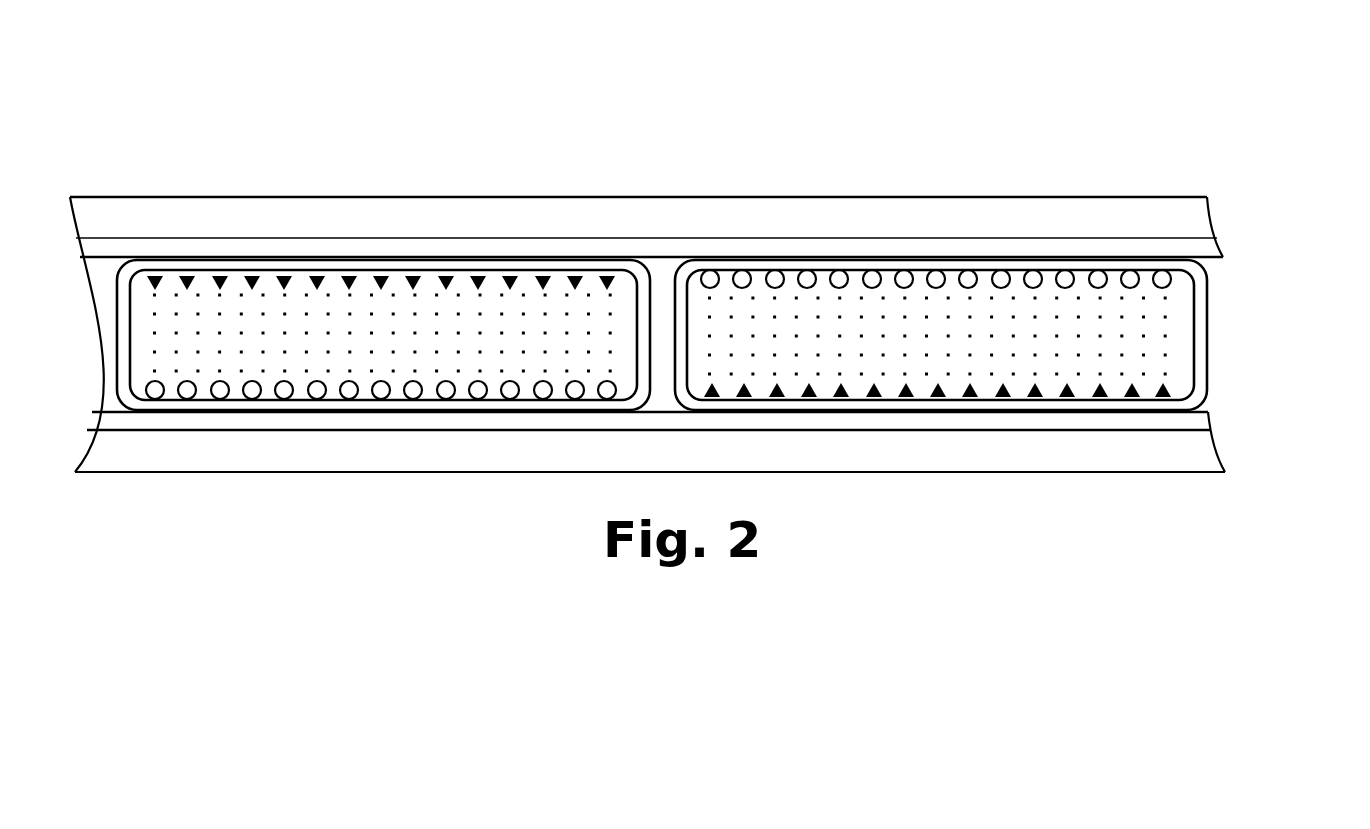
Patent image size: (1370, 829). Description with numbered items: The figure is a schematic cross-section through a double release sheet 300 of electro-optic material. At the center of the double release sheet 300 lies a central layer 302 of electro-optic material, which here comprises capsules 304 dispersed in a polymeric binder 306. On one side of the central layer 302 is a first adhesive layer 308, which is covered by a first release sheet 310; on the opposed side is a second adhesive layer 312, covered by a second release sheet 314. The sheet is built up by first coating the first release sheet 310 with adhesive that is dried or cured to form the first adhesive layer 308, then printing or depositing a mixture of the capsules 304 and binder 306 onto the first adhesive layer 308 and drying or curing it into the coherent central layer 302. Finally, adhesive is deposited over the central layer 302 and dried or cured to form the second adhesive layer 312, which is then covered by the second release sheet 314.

The double release sheet 300 is at (285, 200).
The central layer of electro-optic material 302 is at (1228, 298).
The capsules 304 is at (643, 293).
The polymeric binder 306 is at (660, 328).
The first adhesive layer 308 is at (1001, 242).
The first release sheet 310 is at (855, 212).
The second adhesive layer 312 is at (1205, 423).
The second release sheet 314 is at (1045, 452).